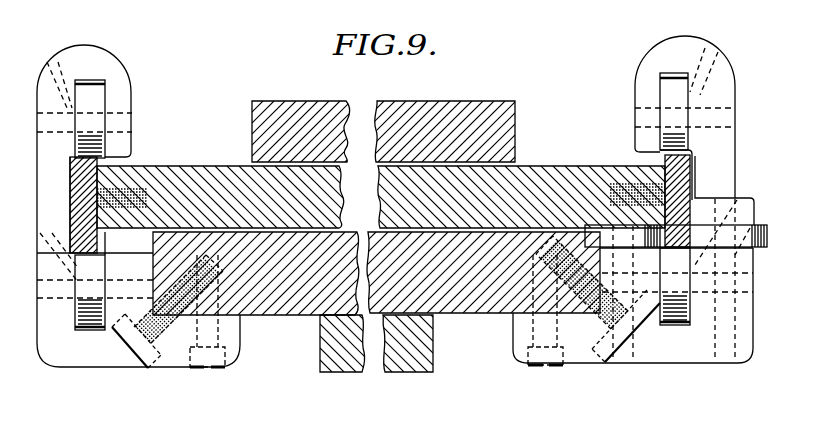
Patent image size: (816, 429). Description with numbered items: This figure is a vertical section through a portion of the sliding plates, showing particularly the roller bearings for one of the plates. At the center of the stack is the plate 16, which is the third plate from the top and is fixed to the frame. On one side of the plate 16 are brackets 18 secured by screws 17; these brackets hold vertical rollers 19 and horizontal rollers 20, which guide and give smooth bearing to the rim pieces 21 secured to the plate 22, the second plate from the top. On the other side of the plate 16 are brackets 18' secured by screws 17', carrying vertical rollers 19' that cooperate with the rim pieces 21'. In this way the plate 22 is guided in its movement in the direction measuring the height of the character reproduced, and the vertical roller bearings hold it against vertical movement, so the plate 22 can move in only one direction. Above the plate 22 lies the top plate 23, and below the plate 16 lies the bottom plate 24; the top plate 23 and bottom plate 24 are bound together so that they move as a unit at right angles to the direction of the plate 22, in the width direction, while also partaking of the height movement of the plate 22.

The plate 16 is at (472, 297).
The screws 17 is at (594, 317).
The screws 17' is at (168, 327).
The brackets 18 is at (644, 199).
The brackets 18' is at (124, 206).
The vertical rollers 19 is at (695, 235).
The vertical rollers 19' is at (119, 238).
The horizontal rollers 20 is at (603, 237).
The rim pieces 21 is at (695, 195).
The rim pieces 21' is at (123, 196).
The plate 22 is at (545, 153).
The top plate 23 is at (483, 97).
The bottom plate 24 is at (412, 365).